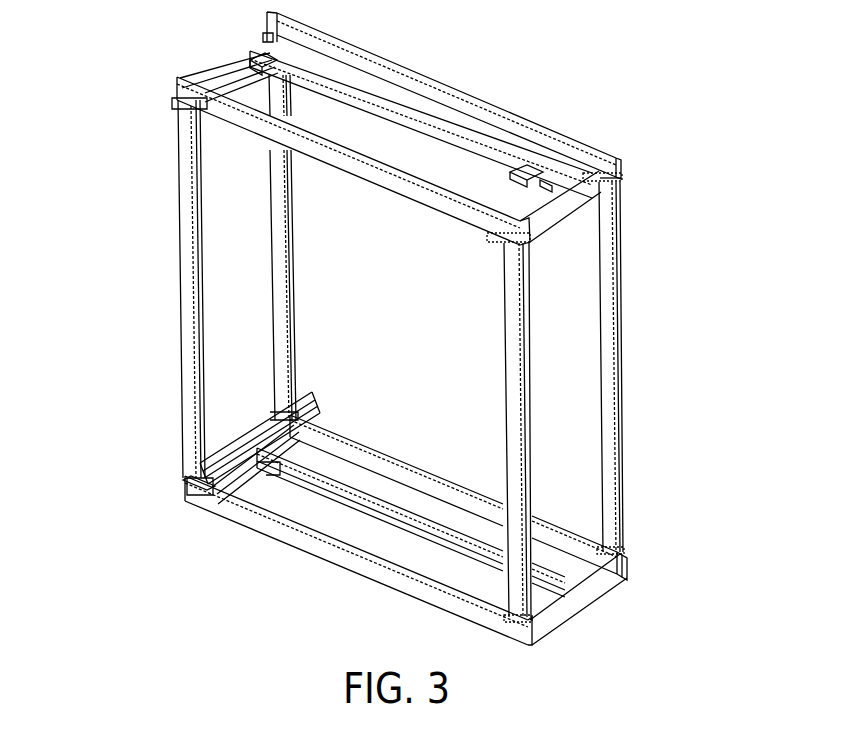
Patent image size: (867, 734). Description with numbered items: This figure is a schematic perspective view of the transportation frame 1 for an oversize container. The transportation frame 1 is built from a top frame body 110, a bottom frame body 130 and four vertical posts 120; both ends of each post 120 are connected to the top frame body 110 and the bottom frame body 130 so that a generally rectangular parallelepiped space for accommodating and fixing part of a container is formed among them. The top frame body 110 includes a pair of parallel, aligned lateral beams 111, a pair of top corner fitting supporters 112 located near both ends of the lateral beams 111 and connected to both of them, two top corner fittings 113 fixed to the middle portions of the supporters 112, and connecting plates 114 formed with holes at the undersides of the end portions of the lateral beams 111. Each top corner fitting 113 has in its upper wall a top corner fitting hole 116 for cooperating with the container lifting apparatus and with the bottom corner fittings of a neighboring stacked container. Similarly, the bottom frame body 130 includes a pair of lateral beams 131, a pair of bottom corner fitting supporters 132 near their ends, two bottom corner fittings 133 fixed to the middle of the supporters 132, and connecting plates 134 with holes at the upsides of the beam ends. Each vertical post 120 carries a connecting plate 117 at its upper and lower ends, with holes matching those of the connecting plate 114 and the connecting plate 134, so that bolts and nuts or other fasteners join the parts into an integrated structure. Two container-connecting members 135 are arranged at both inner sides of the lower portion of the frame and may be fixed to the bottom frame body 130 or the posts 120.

The transportation frame 1 is at (200, 98).
The top frame body 110 is at (443, 85).
The lateral beam 111 is at (505, 110).
The top corner fitting supporter 112 is at (558, 132).
The top corner fitting 113 is at (548, 168).
The connecting plate 114 is at (625, 177).
The top corner fitting hole 116 is at (548, 188).
The connecting plate 117 is at (617, 185).
The vertical post 120 is at (180, 272).
The bottom frame body 130 is at (475, 492).
The lateral beam 131 is at (318, 538).
The bottom corner fitting supporter 132 is at (258, 497).
The bottom corner fitting 133 is at (290, 474).
The connecting plate 134 is at (177, 483).
The container-connecting member 135 is at (252, 435).